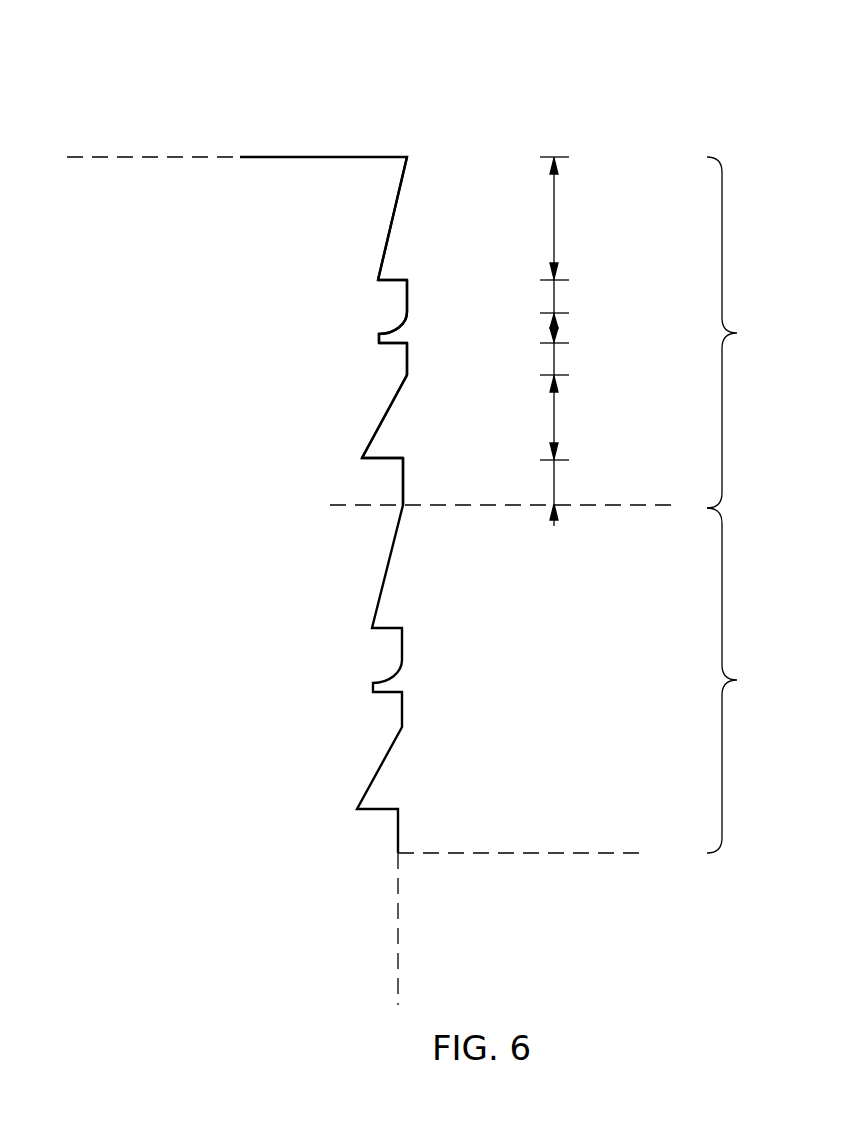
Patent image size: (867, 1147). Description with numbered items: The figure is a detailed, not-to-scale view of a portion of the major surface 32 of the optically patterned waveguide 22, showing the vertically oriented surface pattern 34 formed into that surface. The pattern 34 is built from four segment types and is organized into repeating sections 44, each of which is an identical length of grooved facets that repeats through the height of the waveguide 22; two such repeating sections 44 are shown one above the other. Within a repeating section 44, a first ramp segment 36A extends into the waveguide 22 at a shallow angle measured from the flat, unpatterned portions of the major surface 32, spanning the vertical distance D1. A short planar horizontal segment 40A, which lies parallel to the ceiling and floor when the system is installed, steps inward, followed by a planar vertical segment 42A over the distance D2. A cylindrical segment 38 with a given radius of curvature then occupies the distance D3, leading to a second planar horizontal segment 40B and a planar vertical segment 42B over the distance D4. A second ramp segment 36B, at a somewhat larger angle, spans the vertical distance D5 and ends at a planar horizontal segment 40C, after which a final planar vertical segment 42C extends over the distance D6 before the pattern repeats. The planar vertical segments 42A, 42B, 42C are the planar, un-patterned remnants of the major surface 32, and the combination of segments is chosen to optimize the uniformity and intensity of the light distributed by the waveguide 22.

The optically patterned waveguide 22 is at (184, 207).
The major surface 32 is at (398, 922).
The surface pattern 34 is at (449, 63).
The ramp segment 36A is at (393, 220).
The ramp segment 36B is at (377, 430).
The cylindrical segment 38 is at (378, 333).
The planar horizontal segment 40A is at (392, 279).
The planar horizontal segment 40B is at (392, 341).
The planar horizontal segment 40C is at (388, 456).
The planar vertical segment 42A is at (408, 305).
The planar vertical segment 42B is at (408, 370).
The planar vertical segment 42C is at (404, 486).
The repeating section 44 is at (740, 505).
The vertical distance D1 is at (556, 218).
The distance D2 is at (556, 297).
The distance D3 is at (556, 328).
The distance D4 is at (556, 360).
The vertical distance D5 is at (556, 419).
The distance D6 is at (556, 484).